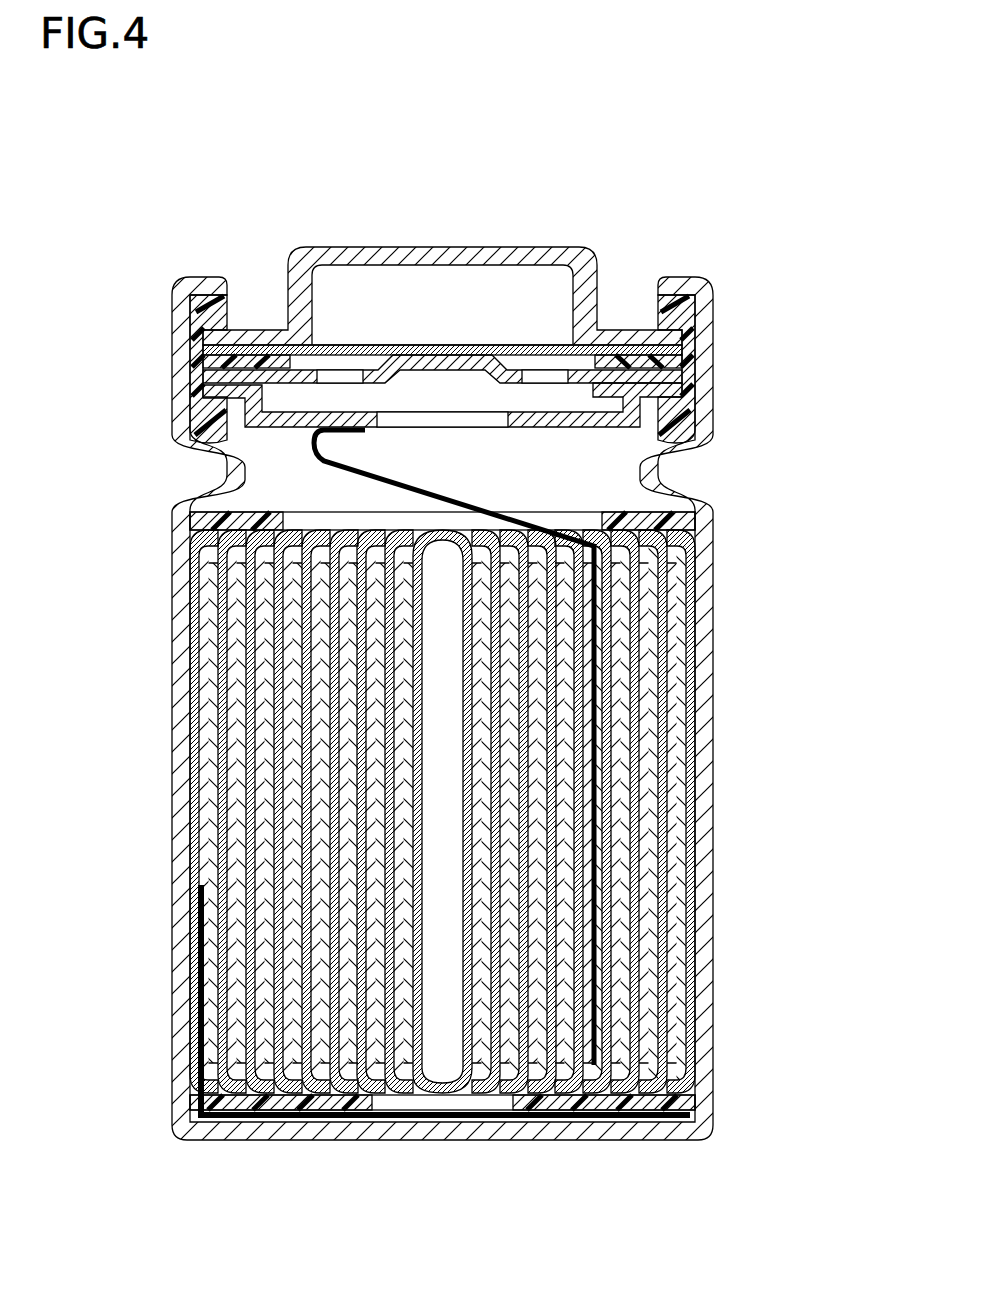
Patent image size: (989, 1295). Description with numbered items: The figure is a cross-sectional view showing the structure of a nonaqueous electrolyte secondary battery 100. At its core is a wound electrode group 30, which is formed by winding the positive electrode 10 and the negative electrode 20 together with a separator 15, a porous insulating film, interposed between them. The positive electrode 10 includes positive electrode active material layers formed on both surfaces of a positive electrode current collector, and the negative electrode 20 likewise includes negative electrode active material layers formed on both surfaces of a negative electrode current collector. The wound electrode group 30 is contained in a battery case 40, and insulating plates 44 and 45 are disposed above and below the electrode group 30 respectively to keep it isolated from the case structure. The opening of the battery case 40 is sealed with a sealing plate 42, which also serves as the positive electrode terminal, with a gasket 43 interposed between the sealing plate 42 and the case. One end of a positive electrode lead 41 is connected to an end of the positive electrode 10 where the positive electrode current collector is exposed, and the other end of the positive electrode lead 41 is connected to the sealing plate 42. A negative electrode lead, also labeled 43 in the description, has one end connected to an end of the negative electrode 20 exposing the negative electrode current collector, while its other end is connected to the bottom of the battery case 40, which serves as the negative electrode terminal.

The nonaqueous electrolyte secondary battery 100 is at (718, 181).
The battery case 40 is at (172, 728).
The sealing plate 42 is at (518, 249).
The gasket / negative electrode lead 43 is at (227, 298).
The positive electrode lead 41 is at (430, 488).
The insulating plate 44 is at (630, 516).
The insulating plate 45 is at (580, 1108).
The wound electrode group 30 is at (529, 811).
The positive electrode 10 is at (652, 803).
The negative electrode 20 is at (680, 750).
The separator 15 is at (665, 832).